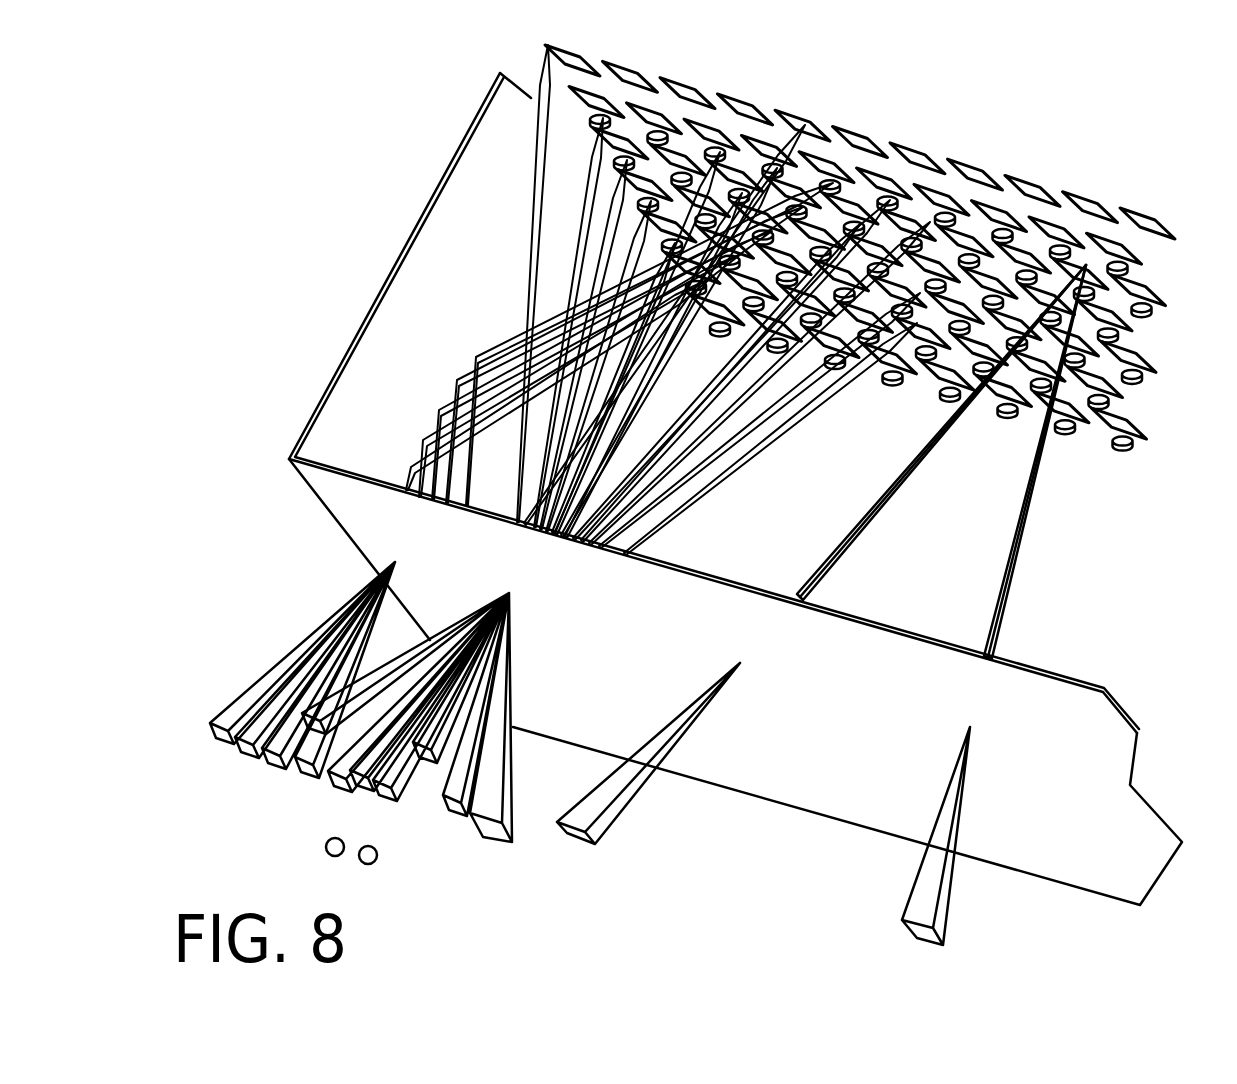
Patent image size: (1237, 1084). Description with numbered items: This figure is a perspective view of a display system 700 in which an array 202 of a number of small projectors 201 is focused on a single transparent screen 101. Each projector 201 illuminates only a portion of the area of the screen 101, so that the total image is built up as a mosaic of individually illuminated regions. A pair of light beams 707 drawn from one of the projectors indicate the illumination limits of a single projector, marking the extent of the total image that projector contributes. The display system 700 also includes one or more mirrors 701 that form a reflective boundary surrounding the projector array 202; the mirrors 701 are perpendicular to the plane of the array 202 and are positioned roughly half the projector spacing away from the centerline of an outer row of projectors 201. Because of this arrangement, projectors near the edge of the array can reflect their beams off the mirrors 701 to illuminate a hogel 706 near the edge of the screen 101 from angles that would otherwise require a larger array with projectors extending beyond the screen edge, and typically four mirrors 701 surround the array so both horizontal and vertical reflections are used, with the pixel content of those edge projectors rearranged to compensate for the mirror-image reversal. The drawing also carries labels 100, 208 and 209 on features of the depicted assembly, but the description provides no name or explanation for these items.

The display system 700 is at (336, 280).
The mirrors 701 is at (336, 364).
The projectors 201 is at (976, 143).
The array 202 is at (808, 124).
The light beams 707 is at (878, 498).
The hogel 706 is at (394, 562).
The contact pins 100 is at (511, 596).
The transparent screen 101 is at (1137, 733).
The alignment hole 208 is at (327, 841).
The alignment hole 209 is at (359, 858).